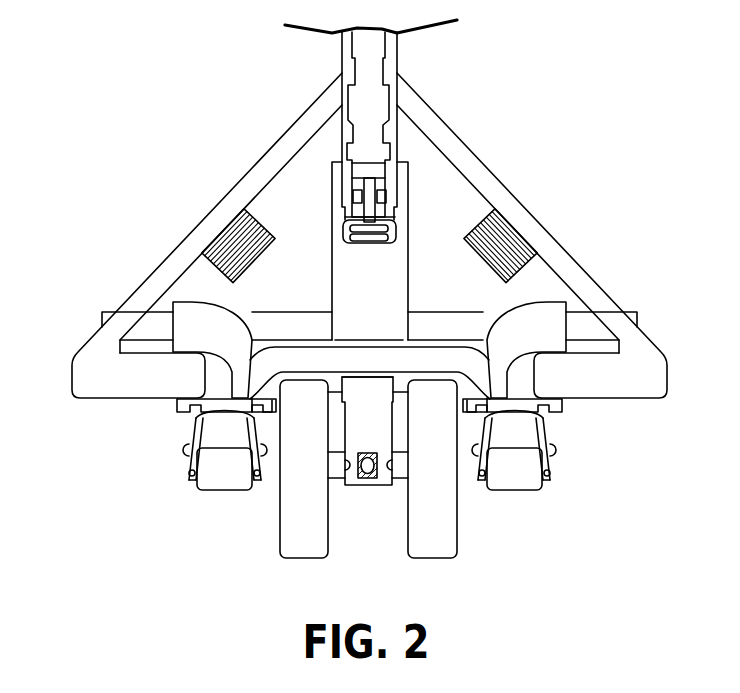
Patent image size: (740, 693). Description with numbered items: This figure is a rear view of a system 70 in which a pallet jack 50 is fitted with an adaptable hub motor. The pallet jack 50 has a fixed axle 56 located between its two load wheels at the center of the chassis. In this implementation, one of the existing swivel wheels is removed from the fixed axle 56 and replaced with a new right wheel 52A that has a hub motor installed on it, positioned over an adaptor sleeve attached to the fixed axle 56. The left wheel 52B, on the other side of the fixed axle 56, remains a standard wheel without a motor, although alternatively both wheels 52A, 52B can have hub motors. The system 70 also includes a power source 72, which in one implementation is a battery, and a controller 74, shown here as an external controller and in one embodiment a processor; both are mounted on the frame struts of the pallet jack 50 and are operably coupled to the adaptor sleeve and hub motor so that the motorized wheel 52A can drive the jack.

The system 70 is at (103, 67).
The pallet jack 50 is at (250, 132).
The power source 72 is at (197, 230).
The controller 74 is at (533, 228).
The right wheel 52A is at (457, 505).
The left wheel 52B is at (282, 510).
The fixed axle 56 is at (336, 480).